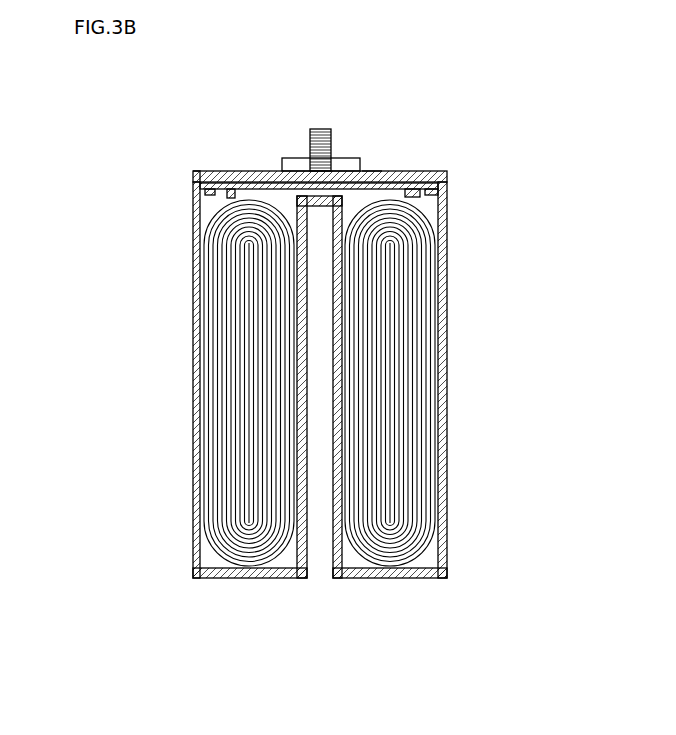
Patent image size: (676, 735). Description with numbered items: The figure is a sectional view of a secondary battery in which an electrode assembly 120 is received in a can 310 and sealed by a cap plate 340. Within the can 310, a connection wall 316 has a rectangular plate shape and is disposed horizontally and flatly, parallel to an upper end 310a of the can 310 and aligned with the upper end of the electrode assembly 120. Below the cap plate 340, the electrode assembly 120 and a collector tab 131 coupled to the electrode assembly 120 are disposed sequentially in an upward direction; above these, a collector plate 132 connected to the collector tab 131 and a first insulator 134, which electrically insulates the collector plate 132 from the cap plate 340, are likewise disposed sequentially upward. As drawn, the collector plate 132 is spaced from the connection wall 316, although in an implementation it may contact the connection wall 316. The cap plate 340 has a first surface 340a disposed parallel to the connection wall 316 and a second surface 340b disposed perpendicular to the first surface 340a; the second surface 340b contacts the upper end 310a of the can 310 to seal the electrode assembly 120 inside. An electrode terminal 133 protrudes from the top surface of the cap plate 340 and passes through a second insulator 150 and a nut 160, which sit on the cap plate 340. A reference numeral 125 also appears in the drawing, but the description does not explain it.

The electrode assembly 120 is at (435, 316).
The insulating member 125 is at (426, 191).
The collector tab 131 is at (409, 197).
The collector plate 132 is at (420, 172).
The electrode terminal 133 is at (320, 130).
The first insulator 134 is at (199, 176).
The second insulator 150 is at (373, 170).
The nut 160 is at (345, 158).
The can 310 is at (335, 380).
The upper end of the can 310a is at (196, 211).
The connection wall 316 is at (436, 236).
The cap plate 340 is at (314, 171).
The first surface 340a is at (214, 186).
The second surface 340b is at (200, 188).